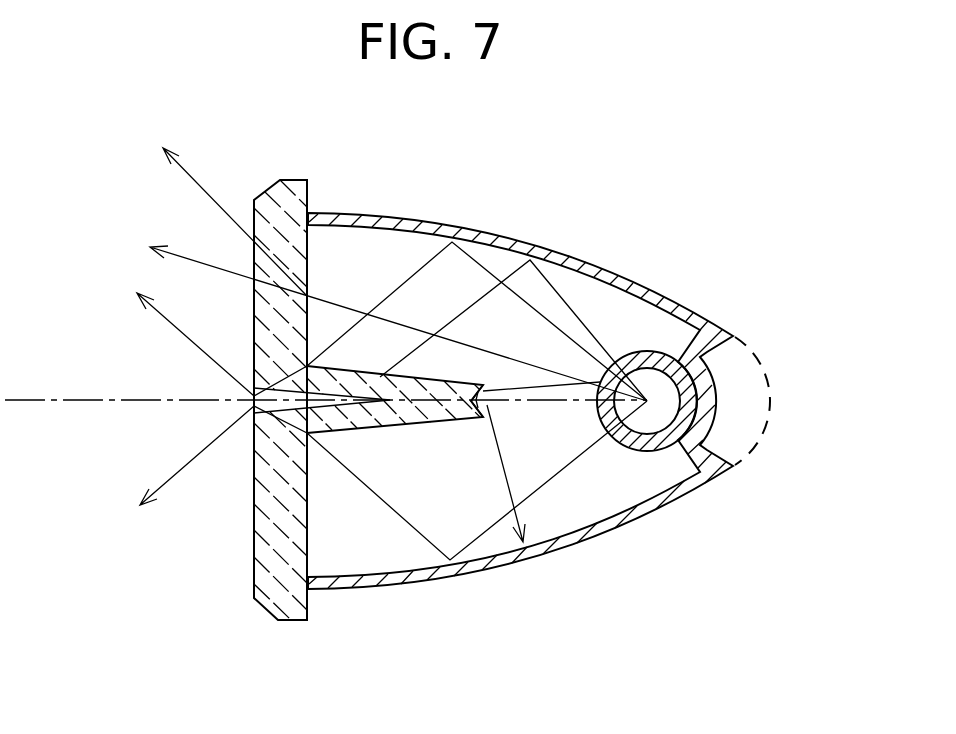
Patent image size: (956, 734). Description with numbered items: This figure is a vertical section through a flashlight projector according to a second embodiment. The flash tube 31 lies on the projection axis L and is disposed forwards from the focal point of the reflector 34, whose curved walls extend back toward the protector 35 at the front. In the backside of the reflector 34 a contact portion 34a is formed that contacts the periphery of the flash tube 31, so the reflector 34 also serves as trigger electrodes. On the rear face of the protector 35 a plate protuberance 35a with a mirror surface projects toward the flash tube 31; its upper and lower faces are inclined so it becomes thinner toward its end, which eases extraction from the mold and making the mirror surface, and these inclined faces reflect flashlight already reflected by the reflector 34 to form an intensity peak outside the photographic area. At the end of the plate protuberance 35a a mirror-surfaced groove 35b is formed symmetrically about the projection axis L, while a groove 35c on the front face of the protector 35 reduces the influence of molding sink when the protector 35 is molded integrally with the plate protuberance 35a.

The projection axis L is at (52, 401).
The flash tube 31 is at (648, 352).
The reflector 34 is at (587, 543).
The contact portion 34a is at (716, 389).
The protector 35 is at (308, 185).
The plate protuberance 35a is at (384, 431).
The groove 35b is at (488, 406).
The groove 35c is at (254, 404).